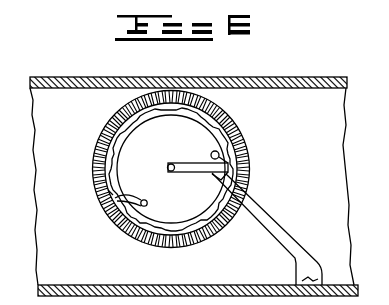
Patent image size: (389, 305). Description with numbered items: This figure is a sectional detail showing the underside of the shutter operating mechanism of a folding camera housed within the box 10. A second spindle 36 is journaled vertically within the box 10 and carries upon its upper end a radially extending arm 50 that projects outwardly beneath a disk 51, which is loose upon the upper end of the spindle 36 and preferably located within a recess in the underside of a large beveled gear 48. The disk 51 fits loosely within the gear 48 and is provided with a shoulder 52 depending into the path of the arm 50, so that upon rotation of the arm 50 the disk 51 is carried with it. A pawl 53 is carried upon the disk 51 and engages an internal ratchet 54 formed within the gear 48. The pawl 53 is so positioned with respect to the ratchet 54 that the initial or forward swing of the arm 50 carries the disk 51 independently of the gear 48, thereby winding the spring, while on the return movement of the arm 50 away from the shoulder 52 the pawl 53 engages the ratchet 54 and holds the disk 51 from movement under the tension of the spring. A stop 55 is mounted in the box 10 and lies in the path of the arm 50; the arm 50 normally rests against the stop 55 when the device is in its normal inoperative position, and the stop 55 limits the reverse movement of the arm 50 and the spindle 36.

The box 10 is at (282, 81).
The second spindle 36 is at (171, 169).
The beveled gear 48 is at (218, 110).
The radially extending arm 50 is at (195, 164).
The disk 51 is at (171, 169).
The shoulder 52 is at (222, 153).
The pawl 53 is at (131, 190).
The internal ratchet 54 is at (108, 191).
The stop 55 is at (268, 225).